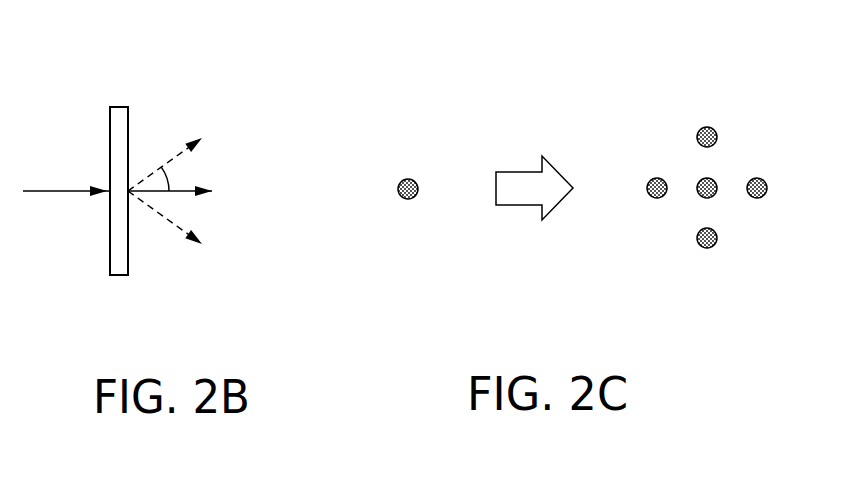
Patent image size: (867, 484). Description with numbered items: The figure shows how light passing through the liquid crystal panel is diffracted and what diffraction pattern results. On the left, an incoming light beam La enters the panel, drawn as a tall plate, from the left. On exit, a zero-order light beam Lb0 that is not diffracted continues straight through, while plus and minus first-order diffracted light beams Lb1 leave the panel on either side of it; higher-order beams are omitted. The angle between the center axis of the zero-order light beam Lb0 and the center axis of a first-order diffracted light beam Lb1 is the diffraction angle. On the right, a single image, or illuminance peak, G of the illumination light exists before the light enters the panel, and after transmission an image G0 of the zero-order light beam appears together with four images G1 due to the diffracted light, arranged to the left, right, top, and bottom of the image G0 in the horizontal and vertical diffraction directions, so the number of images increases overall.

In FIG. 2B, the incident light La is at (53, 192).
In FIG. 2B, the zero-order light beam Lb0 is at (179, 194).
In FIG. 2B, the first-order diffracted light beams Lb1 is at (172, 155).
In FIG. 2C, the image of the illumination light G is at (411, 178).
In FIG. 2C, the image of the zero-order light beam G0 is at (712, 182).
In FIG. 2C, the images by the diffracted light G1 is at (706, 127).